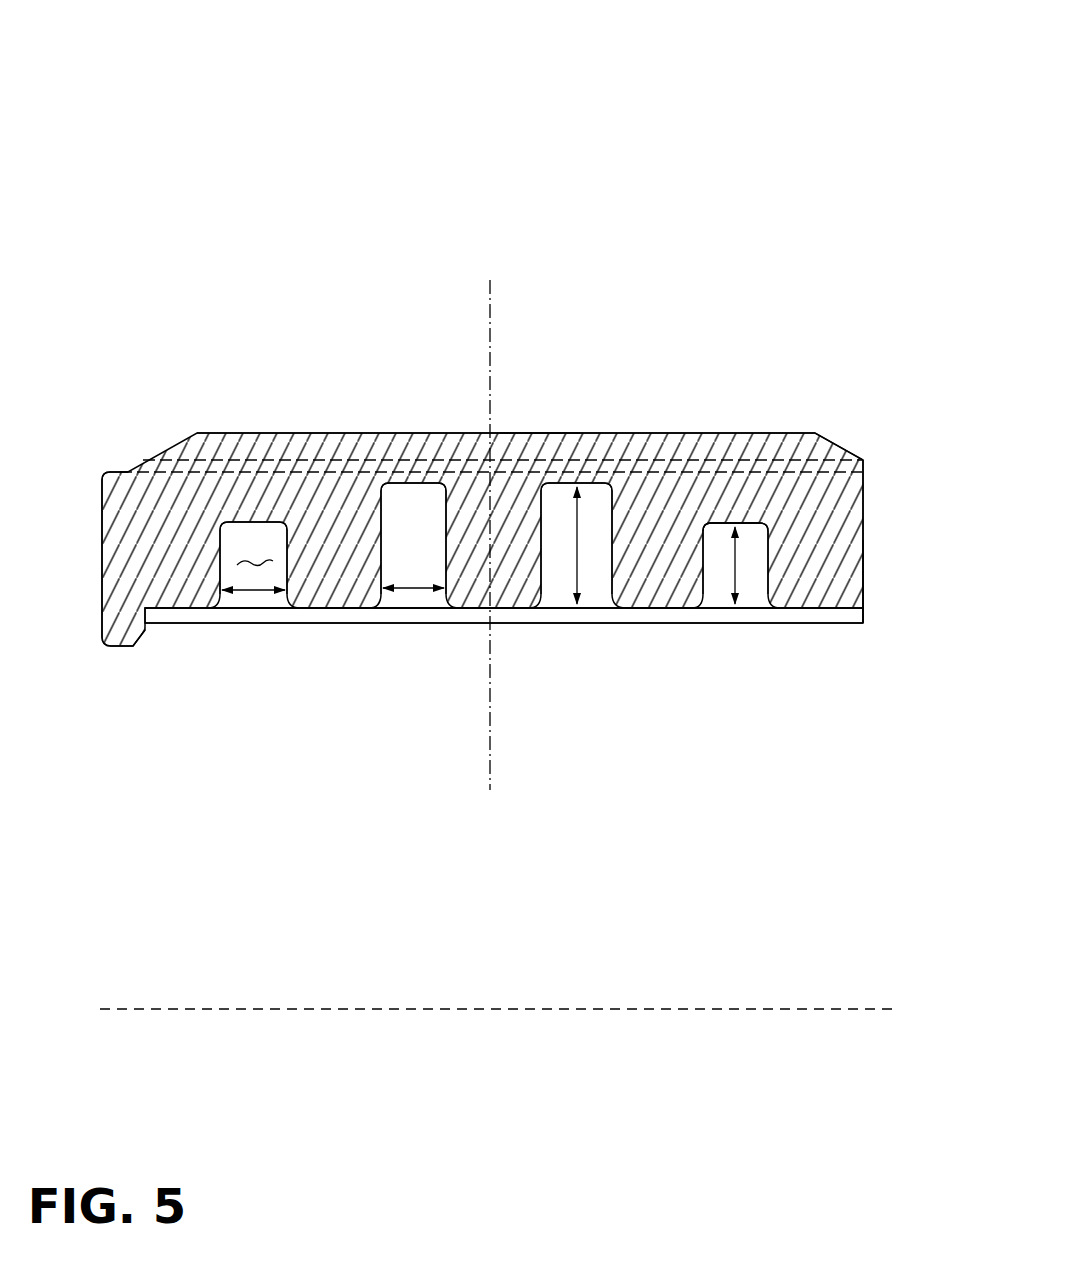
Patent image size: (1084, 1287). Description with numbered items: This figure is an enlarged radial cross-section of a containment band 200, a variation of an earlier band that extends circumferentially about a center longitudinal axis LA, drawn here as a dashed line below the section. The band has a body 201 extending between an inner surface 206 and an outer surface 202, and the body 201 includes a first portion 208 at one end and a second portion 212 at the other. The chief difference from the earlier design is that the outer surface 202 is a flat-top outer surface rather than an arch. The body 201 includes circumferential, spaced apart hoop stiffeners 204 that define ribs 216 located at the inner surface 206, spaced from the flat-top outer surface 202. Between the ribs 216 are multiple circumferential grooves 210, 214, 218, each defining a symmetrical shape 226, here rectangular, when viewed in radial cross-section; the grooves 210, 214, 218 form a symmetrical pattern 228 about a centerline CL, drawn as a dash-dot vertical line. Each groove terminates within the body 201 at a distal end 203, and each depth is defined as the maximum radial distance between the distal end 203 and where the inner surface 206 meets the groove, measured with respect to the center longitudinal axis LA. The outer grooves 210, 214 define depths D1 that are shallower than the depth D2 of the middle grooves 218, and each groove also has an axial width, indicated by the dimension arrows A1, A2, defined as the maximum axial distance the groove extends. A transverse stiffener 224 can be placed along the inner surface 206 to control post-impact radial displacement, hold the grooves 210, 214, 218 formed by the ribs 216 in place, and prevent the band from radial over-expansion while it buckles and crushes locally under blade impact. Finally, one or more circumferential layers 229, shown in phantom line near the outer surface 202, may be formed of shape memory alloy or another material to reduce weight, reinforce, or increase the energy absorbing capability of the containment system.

The containment band 200 is at (204, 38).
The body 201 is at (865, 577).
The outer surface 202 is at (243, 433).
The distal end 203 is at (722, 523).
The hoop stiffeners 204 is at (283, 609).
The inner surface 206 is at (662, 610).
The first portion 208 is at (101, 563).
The groove 210 is at (237, 537).
The second portion 212 is at (865, 510).
The groove 214 is at (760, 545).
The ribs 216 is at (467, 578).
The middle grooves 218 is at (565, 520).
The transverse stiffener 224 is at (208, 623).
The symmetrical shape 226 is at (256, 555).
The symmetrical pattern 228 is at (538, 431).
The circumferential layers 229 is at (852, 452).
The centerline CL is at (493, 335).
The center longitudinal axis LA is at (272, 1008).
The axial width A1 is at (415, 592).
The axial width A2 is at (252, 590).
The depth D1 is at (745, 563).
The depth D2 is at (580, 535).